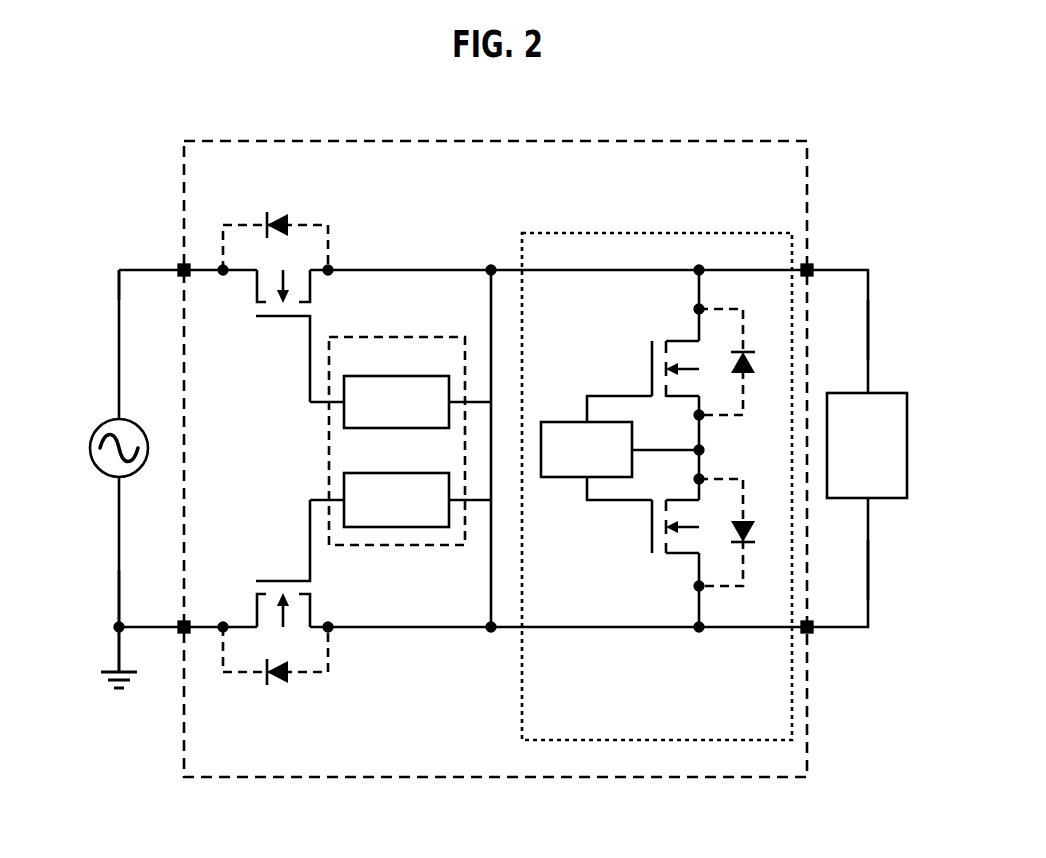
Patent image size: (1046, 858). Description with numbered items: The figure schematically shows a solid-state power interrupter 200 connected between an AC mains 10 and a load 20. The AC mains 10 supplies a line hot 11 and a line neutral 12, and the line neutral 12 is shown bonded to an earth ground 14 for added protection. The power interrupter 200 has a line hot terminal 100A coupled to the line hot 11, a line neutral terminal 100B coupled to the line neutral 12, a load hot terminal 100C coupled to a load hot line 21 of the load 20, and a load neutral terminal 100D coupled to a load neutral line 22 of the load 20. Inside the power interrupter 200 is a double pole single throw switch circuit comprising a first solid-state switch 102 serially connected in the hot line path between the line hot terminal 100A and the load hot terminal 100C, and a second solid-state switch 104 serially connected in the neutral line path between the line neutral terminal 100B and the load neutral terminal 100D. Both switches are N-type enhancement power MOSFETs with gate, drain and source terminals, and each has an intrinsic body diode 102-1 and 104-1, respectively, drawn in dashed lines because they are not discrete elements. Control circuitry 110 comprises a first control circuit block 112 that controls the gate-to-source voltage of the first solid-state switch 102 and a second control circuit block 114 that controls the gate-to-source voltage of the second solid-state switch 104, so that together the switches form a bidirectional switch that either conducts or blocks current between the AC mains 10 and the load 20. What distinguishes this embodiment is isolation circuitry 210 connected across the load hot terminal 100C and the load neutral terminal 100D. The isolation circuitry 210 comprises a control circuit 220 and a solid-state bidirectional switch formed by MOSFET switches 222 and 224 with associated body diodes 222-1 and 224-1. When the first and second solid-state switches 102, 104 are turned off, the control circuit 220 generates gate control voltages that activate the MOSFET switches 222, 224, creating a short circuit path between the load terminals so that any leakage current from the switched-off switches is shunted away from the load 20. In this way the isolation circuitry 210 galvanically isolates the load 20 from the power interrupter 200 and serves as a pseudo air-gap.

The solid-state power interrupter 200 is at (212, 141).
The isolation circuitry 210 is at (540, 233).
The AC mains 10 is at (90, 450).
The line hot 11 is at (119, 296).
The line neutral 12 is at (119, 595).
The earth ground 14 is at (95, 675).
The line hot terminal 100A is at (176, 265).
The line neutral terminal 100B is at (176, 636).
The load hot terminal 100C is at (820, 262).
The load neutral terminal 100D is at (820, 634).
The first solid-state switch 102 is at (277, 334).
The body diode 102-1 is at (287, 215).
The second solid-state switch 104 is at (272, 558).
The body diode 104-1 is at (286, 680).
The control circuitry 110 is at (371, 337).
The first control circuit block 112 is at (390, 376).
The second control circuit block 114 is at (390, 473).
The control circuit 220 is at (577, 422).
The MOSFET switch 222 is at (633, 360).
The body diode 222-1 is at (749, 376).
The MOSFET switch 224 is at (629, 532).
The body diode 224-1 is at (751, 521).
The load 20 is at (907, 437).
The load hot line 21 is at (868, 318).
The load neutral line 22 is at (868, 578).